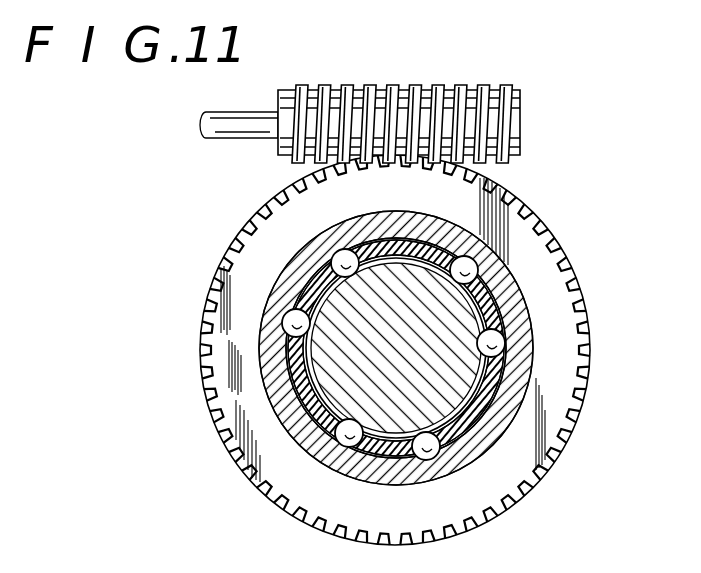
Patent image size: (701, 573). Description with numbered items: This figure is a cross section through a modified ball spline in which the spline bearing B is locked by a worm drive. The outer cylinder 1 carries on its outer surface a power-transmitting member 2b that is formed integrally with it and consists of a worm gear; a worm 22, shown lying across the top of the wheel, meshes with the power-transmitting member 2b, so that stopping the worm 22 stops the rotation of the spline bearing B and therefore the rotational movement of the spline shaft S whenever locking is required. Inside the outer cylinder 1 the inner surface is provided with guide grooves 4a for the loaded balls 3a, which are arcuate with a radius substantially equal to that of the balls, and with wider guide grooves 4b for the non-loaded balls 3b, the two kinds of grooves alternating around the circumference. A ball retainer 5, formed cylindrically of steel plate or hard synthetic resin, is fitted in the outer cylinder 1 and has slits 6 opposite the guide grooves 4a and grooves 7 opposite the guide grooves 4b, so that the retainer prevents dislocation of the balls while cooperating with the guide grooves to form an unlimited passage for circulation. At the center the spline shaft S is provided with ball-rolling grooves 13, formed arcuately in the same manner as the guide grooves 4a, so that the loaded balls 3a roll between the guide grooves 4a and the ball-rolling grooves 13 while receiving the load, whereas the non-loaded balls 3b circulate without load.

The worm 22 is at (507, 112).
The power-transmitting member 2b is at (530, 213).
The spline bearing B is at (397, 348).
The outer cylinder 1 is at (283, 430).
The grooves 7 is at (263, 352).
The ball retainer 5 is at (305, 283).
The loaded balls 3a is at (301, 272).
The non-loaded balls 3b is at (283, 327).
The slits 6 is at (372, 212).
The spline shaft S is at (447, 400).
The guide grooves 4a is at (343, 250).
The guide grooves 4b is at (280, 287).
The ball-rolling grooves 13 is at (357, 270).